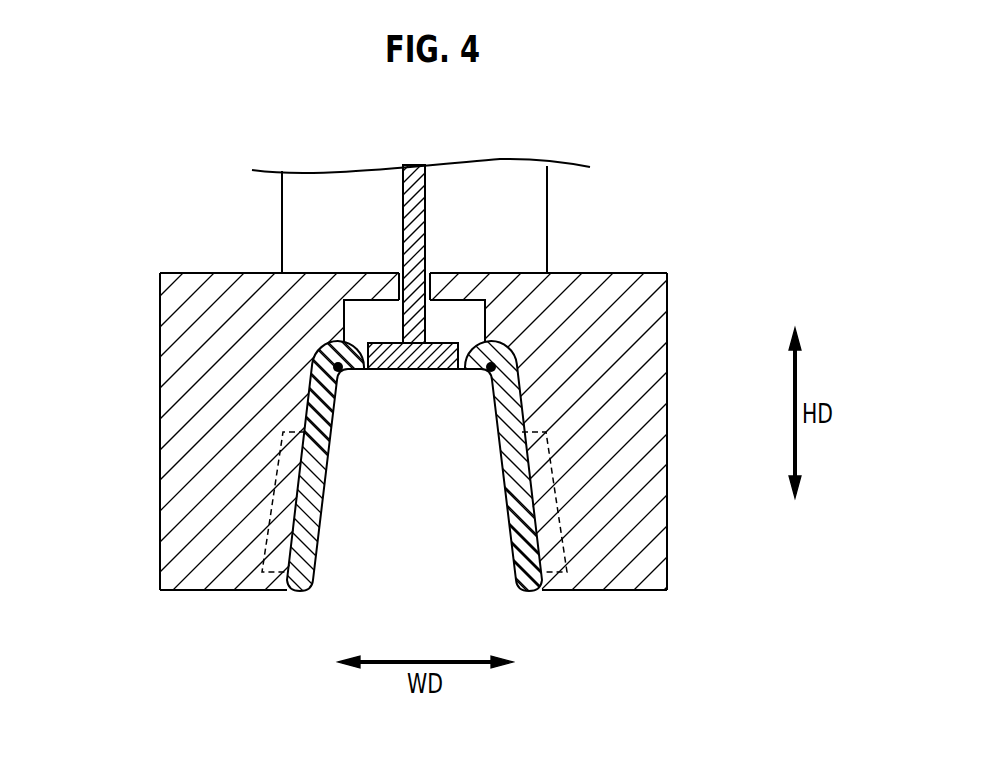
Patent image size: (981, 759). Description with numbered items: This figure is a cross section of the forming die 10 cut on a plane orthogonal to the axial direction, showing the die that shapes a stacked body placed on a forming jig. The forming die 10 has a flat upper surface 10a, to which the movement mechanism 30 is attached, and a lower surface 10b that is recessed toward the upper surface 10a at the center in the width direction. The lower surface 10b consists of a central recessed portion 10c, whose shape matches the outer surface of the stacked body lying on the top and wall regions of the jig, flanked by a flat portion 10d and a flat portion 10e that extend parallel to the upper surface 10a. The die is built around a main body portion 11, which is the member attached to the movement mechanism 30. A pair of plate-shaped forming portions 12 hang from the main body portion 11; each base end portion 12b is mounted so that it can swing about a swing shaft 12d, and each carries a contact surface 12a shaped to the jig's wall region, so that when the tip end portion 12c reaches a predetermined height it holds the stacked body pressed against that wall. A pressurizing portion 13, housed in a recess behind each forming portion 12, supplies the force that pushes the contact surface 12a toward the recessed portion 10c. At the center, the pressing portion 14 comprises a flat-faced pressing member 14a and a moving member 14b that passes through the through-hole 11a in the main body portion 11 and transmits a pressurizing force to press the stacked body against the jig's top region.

The forming die 10 is at (113, 267).
The movement mechanism 30 is at (282, 214).
The main body portion 11 is at (667, 318).
The upper surface 10a is at (620, 272).
The lower surface 10b is at (667, 589).
The recessed portion 10c is at (407, 405).
The flat portion 10d is at (188, 591).
The flat portion 10e is at (625, 591).
The through-hole 11a is at (428, 292).
The moving member 14b is at (423, 178).
The pressing portion 14 is at (383, 371).
The pressing member 14a is at (452, 371).
The forming portion 12 is at (320, 504).
The contact surface 12a is at (318, 556).
The base end portion 12b is at (350, 340).
The tip end portion 12c is at (297, 592).
The swing shaft 12d is at (338, 363).
The pressurizing portion 13 is at (262, 576).